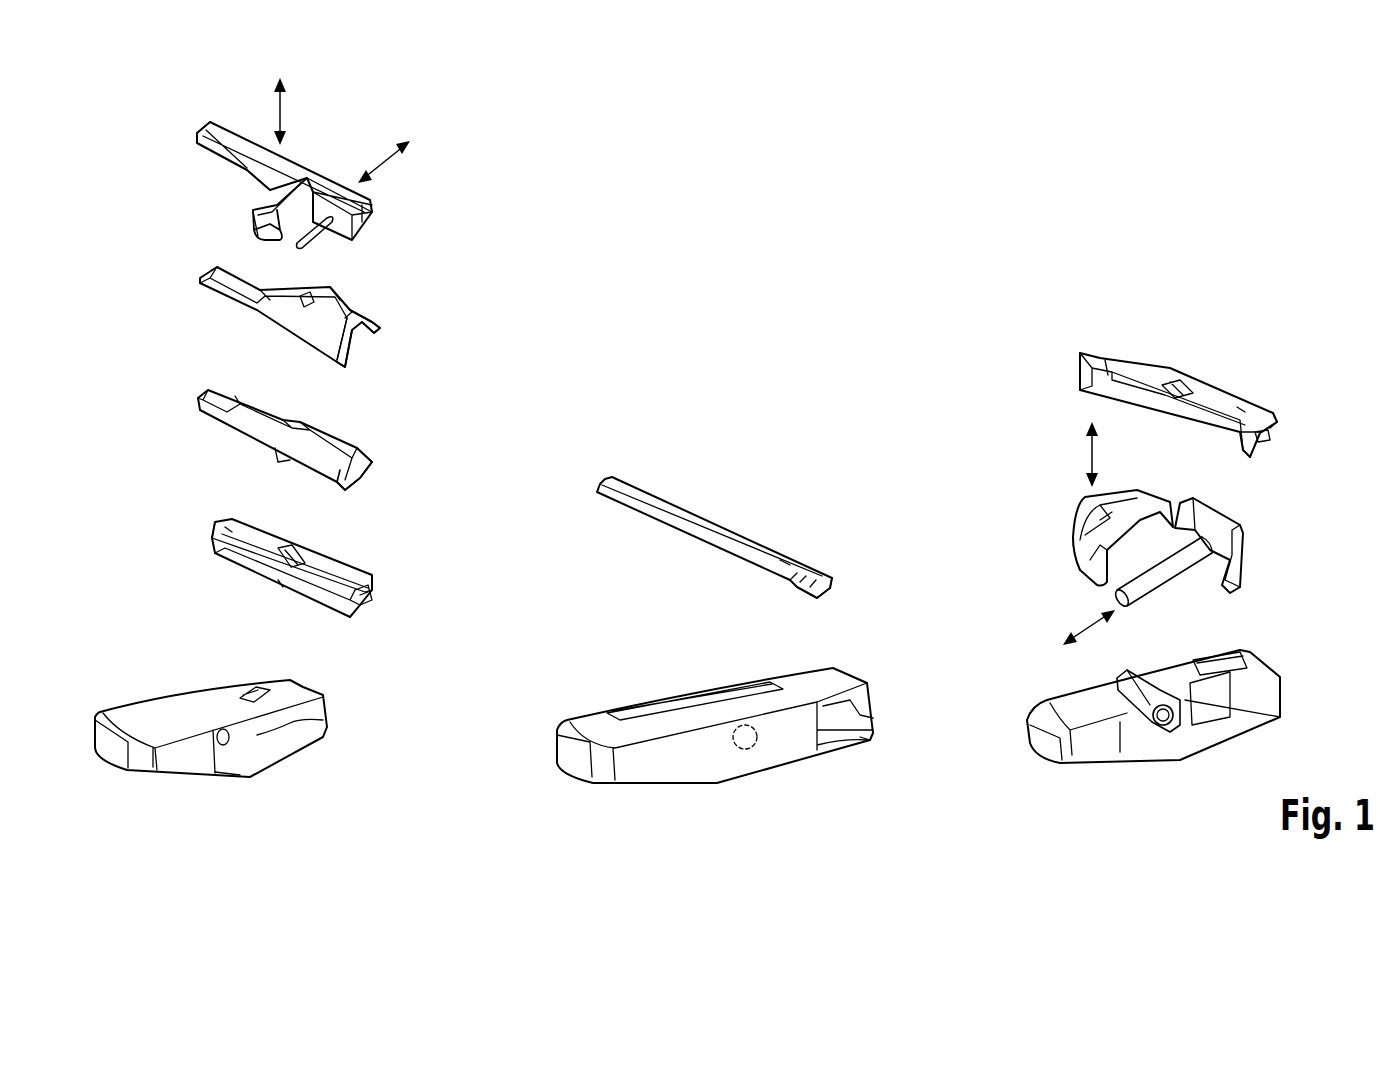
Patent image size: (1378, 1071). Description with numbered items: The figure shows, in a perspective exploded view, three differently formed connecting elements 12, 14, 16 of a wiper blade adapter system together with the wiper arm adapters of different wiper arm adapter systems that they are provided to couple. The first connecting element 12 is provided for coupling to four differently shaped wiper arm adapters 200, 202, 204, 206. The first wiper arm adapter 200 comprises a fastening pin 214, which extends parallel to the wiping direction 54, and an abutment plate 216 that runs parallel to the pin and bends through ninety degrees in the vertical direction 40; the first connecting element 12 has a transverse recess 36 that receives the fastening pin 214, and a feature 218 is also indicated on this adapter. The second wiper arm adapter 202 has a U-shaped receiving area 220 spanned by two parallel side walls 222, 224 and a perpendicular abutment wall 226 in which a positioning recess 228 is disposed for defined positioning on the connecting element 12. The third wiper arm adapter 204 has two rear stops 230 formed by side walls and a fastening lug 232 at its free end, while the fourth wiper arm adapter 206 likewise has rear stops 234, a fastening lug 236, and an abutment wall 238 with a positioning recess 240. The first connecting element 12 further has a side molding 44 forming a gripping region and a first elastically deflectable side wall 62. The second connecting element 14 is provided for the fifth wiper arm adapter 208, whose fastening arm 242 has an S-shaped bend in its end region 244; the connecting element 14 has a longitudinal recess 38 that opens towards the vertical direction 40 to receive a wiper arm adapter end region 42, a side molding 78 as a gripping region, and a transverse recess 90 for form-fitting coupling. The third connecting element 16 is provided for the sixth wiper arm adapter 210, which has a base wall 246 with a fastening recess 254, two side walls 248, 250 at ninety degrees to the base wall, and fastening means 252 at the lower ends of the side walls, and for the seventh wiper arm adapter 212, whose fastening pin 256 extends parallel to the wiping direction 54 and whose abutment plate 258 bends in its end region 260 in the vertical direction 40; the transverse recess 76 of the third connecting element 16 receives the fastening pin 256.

The first connecting element 12 is at (142, 681).
The second connecting element 14 is at (600, 683).
The third connecting element 16 is at (1052, 672).
The transverse recess 36 is at (228, 735).
The longitudinal recess 38 is at (712, 690).
The vertical direction 40 is at (284, 112).
The wiper arm adapter end region 42 is at (840, 590).
The side molding 44 is at (323, 737).
The wiping direction 54 is at (386, 165).
The first elastically deflectable side wall 62 is at (225, 772).
The transverse recess 76 is at (1167, 717).
The side molding 78 is at (860, 737).
The transverse recess 90 is at (752, 748).
The first wiper arm adapter 200 is at (338, 160).
The second wiper arm adapter 202 is at (388, 296).
The third wiper arm adapter 204 is at (393, 441).
The fourth wiper arm adapter 206 is at (381, 568).
The fifth wiper arm adapter 208 is at (795, 527).
The sixth wiper arm adapter 210 is at (1250, 375).
The seventh wiper arm adapter 212 is at (1260, 542).
The fastening pin 214 is at (357, 243).
The abutment plate 216 is at (267, 197).
The recess 218 is at (248, 223).
The U-shaped receiving area 220 is at (392, 357).
The side wall 222 is at (377, 320).
The side wall 224 is at (347, 357).
The abutment wall 226 is at (343, 318).
The positioning recess 228 is at (307, 297).
The rear stops 230 is at (278, 462).
The fastening lug 232 is at (372, 468).
The rear stops 234 is at (283, 587).
The fastening lug 236 is at (370, 590).
The abutment wall 238 is at (232, 532).
The positioning recess 240 is at (292, 553).
The fastening arm 242 is at (780, 560).
The end region 244 is at (767, 588).
The base wall 246 is at (1237, 407).
The side wall 248 is at (1277, 417).
The side wall 250 is at (1243, 453).
The fastening means 252 is at (1272, 433).
The fastening recess 254 is at (1180, 382).
The fastening pin 256 is at (1163, 577).
The abutment plate 258 is at (1118, 513).
The end region 260 is at (1053, 547).